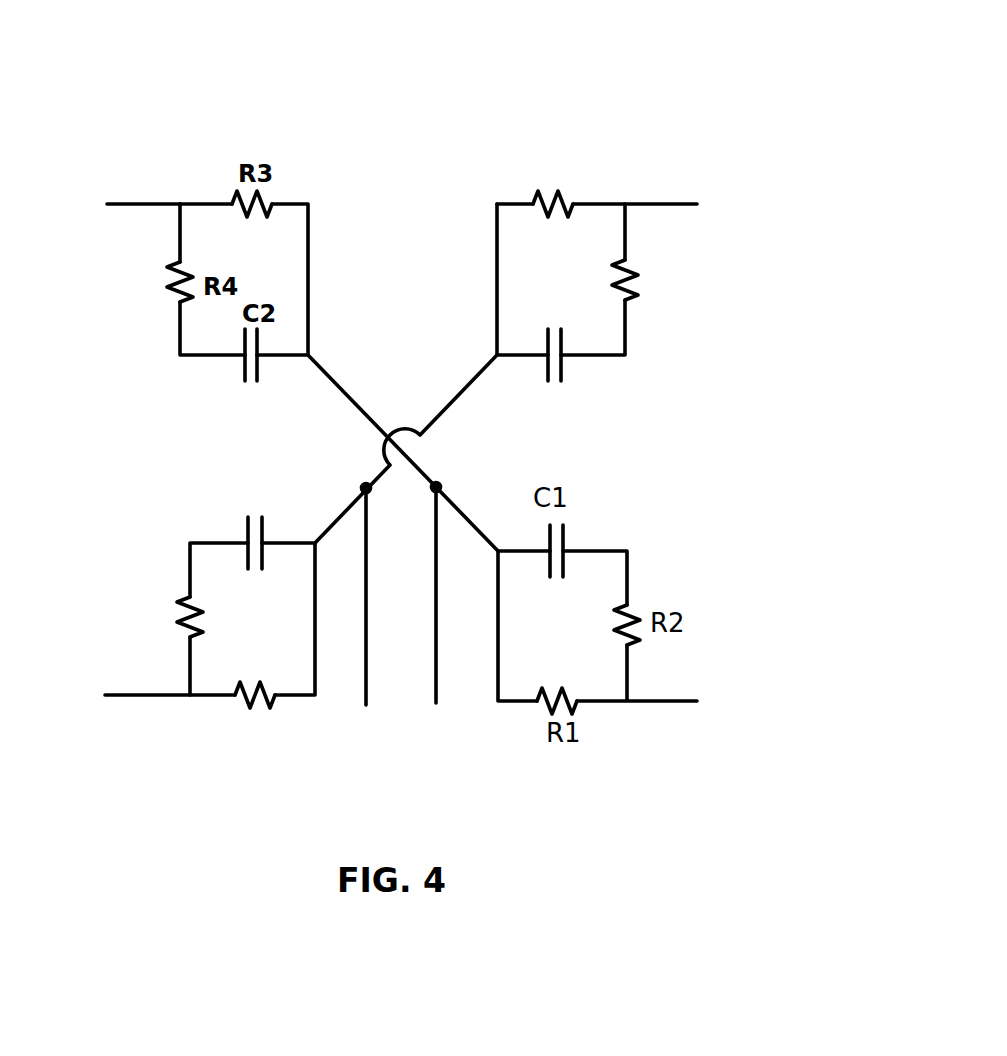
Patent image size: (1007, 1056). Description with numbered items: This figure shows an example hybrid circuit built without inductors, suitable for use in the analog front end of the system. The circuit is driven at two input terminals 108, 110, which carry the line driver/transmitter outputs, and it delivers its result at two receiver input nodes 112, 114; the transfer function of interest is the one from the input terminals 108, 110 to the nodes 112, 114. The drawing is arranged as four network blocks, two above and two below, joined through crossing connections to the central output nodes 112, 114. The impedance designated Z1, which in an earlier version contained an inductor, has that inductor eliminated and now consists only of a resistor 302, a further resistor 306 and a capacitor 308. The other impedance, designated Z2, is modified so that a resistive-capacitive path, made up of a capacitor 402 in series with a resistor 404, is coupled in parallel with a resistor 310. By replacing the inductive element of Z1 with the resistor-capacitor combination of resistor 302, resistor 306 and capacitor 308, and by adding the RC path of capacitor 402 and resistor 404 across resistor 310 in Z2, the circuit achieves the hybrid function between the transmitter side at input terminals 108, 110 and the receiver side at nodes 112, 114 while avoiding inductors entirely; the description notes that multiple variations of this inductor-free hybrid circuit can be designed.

The input terminal 108 is at (135, 205).
The input terminal 110 is at (133, 698).
The node 112 is at (358, 668).
The node 114 is at (437, 670).
The resistor 302 is at (558, 148).
The resistor 306 is at (681, 287).
The capacitor 308 is at (552, 386).
The resistor 310 is at (250, 748).
The capacitor 402 is at (257, 477).
The resistor 404 is at (119, 601).